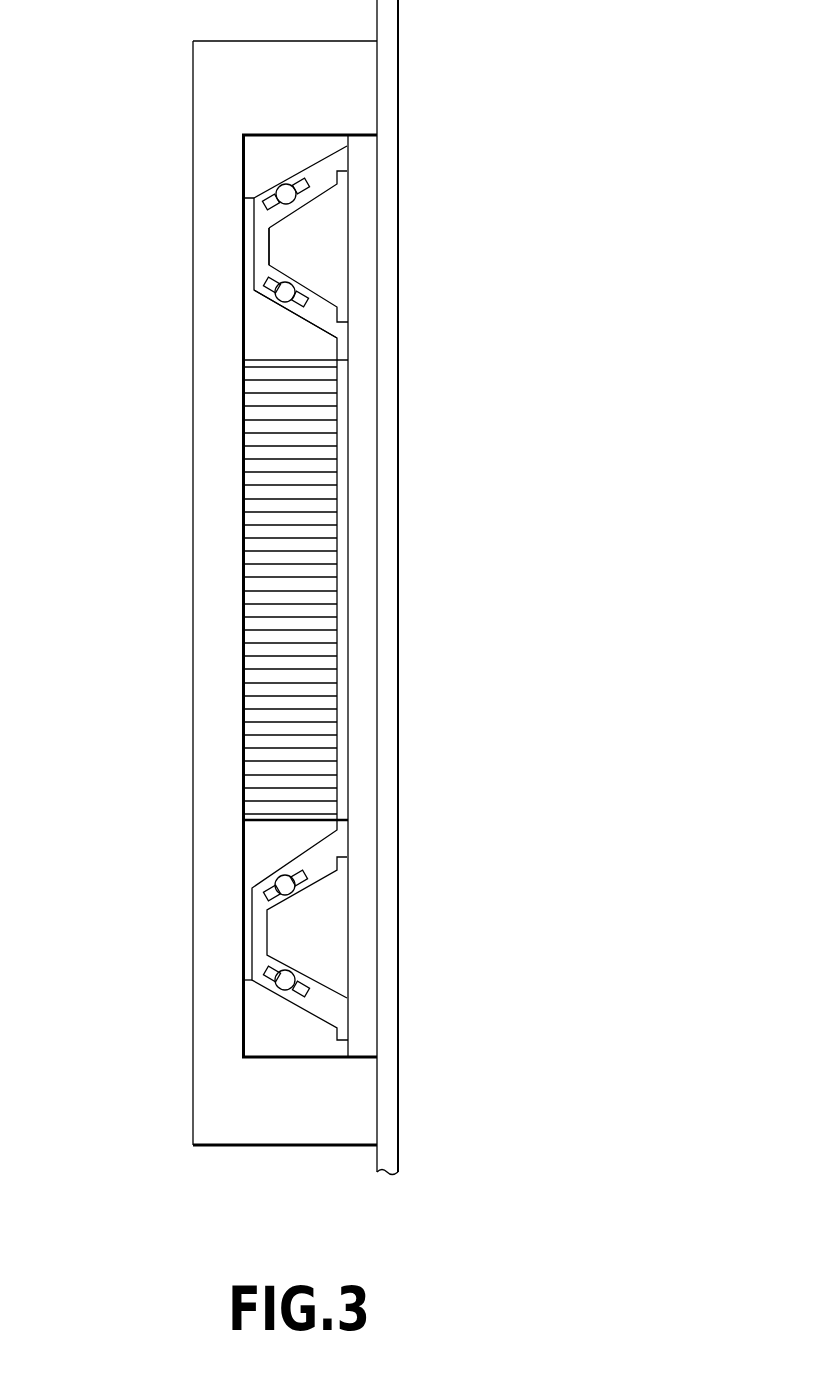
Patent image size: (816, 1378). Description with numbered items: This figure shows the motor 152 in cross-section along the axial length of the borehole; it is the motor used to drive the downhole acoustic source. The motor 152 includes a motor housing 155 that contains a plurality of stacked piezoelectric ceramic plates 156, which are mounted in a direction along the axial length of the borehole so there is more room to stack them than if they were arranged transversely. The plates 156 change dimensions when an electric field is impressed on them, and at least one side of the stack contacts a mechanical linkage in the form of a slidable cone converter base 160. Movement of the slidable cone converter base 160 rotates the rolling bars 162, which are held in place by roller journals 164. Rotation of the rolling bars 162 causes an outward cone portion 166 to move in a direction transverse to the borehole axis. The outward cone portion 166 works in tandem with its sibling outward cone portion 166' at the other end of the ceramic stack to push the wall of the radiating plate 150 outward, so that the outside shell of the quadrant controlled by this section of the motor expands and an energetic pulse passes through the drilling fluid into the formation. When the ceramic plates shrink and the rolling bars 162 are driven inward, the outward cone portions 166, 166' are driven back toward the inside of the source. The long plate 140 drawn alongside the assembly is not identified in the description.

The mounting plate 140 is at (393, 63).
The radiating plate 150 is at (367, 280).
The motor 152 is at (165, 107).
The motor housing 155 is at (233, 1128).
The stacked piezoelectric ceramic plates 156 is at (238, 424).
The slidable cone converter base 160 is at (258, 339).
The rolling bar 162 is at (279, 190).
The roller journal 164 is at (243, 226).
The outward cone portion 166 is at (371, 222).
The outward cone portion 166' is at (370, 927).